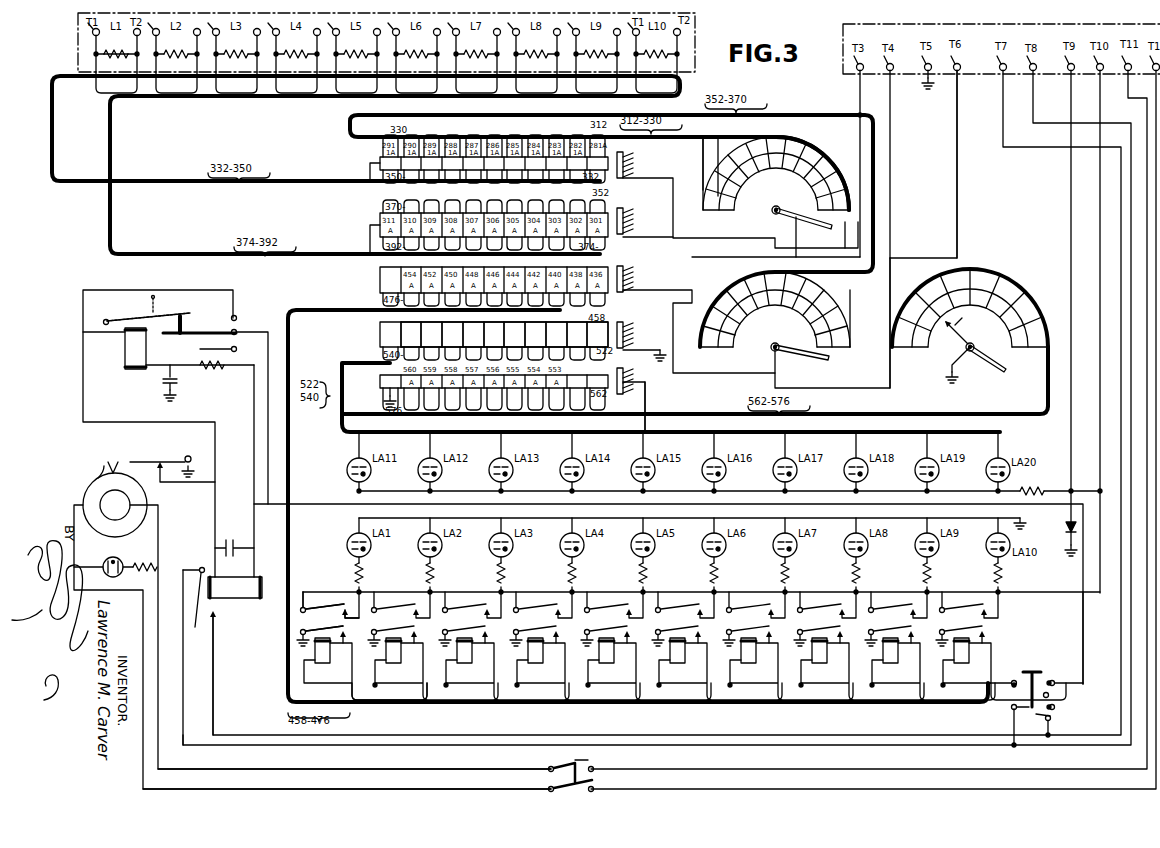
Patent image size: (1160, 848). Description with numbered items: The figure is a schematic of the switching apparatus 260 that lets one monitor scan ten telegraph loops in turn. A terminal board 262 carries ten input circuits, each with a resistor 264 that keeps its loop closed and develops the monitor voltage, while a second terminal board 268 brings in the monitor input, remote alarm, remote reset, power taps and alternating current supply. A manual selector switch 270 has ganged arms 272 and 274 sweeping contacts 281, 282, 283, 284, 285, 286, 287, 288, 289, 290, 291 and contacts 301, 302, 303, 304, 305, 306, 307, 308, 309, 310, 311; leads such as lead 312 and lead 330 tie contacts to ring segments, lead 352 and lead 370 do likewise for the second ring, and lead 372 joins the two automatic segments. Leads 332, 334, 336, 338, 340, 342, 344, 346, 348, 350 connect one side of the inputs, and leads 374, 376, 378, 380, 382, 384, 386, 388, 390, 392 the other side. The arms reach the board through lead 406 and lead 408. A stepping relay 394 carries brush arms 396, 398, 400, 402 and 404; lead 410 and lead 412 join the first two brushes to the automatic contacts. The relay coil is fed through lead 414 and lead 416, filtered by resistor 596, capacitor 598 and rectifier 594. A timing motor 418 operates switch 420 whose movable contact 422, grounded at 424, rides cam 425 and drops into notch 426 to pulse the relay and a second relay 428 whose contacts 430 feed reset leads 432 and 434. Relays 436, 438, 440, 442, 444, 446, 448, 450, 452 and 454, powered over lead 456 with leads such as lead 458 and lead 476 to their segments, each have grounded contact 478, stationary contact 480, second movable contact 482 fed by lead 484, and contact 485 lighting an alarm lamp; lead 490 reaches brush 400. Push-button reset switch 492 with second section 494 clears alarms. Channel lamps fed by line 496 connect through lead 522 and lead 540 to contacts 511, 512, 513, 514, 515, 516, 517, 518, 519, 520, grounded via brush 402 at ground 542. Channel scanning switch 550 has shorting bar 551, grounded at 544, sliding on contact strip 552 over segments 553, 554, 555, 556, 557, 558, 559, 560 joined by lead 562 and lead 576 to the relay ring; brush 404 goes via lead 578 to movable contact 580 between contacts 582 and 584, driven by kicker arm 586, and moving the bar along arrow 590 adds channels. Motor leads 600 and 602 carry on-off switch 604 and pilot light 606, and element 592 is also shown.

The switching apparatus 260 is at (85, 248).
The terminal board 262 is at (78, 47).
The resistor 264 is at (382, 46).
The second terminal board 268 is at (843, 26).
The manual selector switch 270 is at (738, 218).
The selector arm 272 is at (789, 237).
The sweep arm 274 is at (787, 362).
The contact 281 is at (714, 173).
The contact 282 is at (722, 205).
The contact 283 is at (730, 186).
The contact 284 is at (742, 173).
The contact 285 is at (755, 163).
The contact 286 is at (774, 157).
The contact 287 is at (791, 162).
The contact 288 is at (800, 172).
The contact 289 is at (812, 183).
The contact 290 is at (832, 214).
The contact 291 is at (824, 218).
The contact 301 is at (722, 343).
The contact 302 is at (724, 342).
The contact 303 is at (729, 321).
The contact 304 is at (740, 308).
The contact 305 is at (754, 298).
The contact 306 is at (773, 293).
The contact 307 is at (781, 299).
The contact 308 is at (800, 307).
The contact 309 is at (812, 319).
The contact 310 is at (836, 340).
The contact 311 is at (840, 353).
The lead 312 is at (703, 185).
The lead 330 is at (845, 178).
The lead 332 is at (114, 47).
The lead 334 is at (174, 47).
The lead 336 is at (234, 47).
The lead 338 is at (294, 47).
The lead 340 is at (354, 47).
The lead 342 is at (414, 47).
The lead 344 is at (474, 47).
The lead 346 is at (534, 47).
The lead 348 is at (594, 47).
The lead 350 is at (654, 47).
The lead 352 is at (703, 333).
The lead 370 is at (845, 322).
The lead 372 is at (370, 163).
The lead 374 is at (116, 82).
The lead 376 is at (176, 82).
The lead 378 is at (236, 82).
The lead 380 is at (296, 82).
The lead 382 is at (356, 82).
The lead 384 is at (416, 82).
The lead 386 is at (476, 82).
The lead 388 is at (536, 82).
The lead 390 is at (596, 82).
The lead 392 is at (656, 82).
The stepping relay 394 is at (120, 360).
The brush arm 396 is at (737, 200).
The brush contact 398 is at (645, 220).
The wiper contact 400 is at (753, 323).
The wiper contact 402 is at (638, 332).
The brush 404 is at (631, 400).
The lead 406 is at (860, 92).
The lead 408 is at (890, 96).
The lead 410 is at (727, 238).
The lead 412 is at (716, 373).
The lead 414 is at (254, 405).
The lead 416 is at (322, 504).
The timing motor 418 is at (100, 489).
The normally open switch 420 is at (158, 453).
The movable contact 422 is at (120, 458).
The ground 424 is at (188, 456).
The cam 425 is at (100, 486).
The notch 426 is at (98, 478).
The second relay 428 is at (243, 598).
The contacts 430 is at (198, 625).
The lead 432 is at (213, 672).
The lead 434 is at (188, 745).
The relay 436 is at (362, 663).
The relay 438 is at (433, 663).
The relay 440 is at (504, 663).
The relay 442 is at (575, 663).
The relay 444 is at (646, 663).
The relay 446 is at (717, 663).
The relay 448 is at (788, 663).
The relay 450 is at (859, 663).
The relay 452 is at (930, 663).
The relay 454 is at (1001, 663).
The lead 456 is at (1083, 608).
The lead 458 is at (352, 689).
The lead 476 is at (998, 692).
The movable contact 478 is at (613, 623).
The stationary contact 480 is at (344, 602).
The second movable contact 482 is at (318, 594).
The lead 484 is at (701, 584).
The stationary contact 485 is at (345, 604).
The lead 490 is at (957, 168).
The push-button reset switch 492 is at (1044, 667).
The second section 494 is at (1052, 715).
The line 496 is at (750, 489).
The contact 511 is at (597, 334).
The contact 512 is at (577, 334).
The contact 513 is at (556, 334).
The contact 514 is at (535, 334).
The contact 515 is at (514, 334).
The contact 516 is at (494, 334).
The contact 517 is at (473, 334).
The contact 518 is at (452, 334).
The contact 519 is at (431, 334).
The contact 520 is at (411, 334).
The lead 522 is at (358, 455).
The lead 540 is at (998, 456).
The ground 542 is at (661, 346).
The ground 544 is at (950, 374).
The channel scanning switch 550 is at (960, 340).
The arcuate shorting bar 551 is at (1007, 372).
The contact strip 552 is at (912, 352).
The contact segment 553 is at (922, 304).
The contact segment 554 is at (917, 311).
The contact segment 555 is at (941, 293).
The contact segment 556 is at (966, 290).
The contact segment 557 is at (991, 287).
The contact segment 558 is at (990, 299).
The contact segment 559 is at (1010, 329).
The contact segment 560 is at (1015, 341).
The lead 562 is at (915, 286).
The lead 576 is at (1035, 350).
The lead 578 is at (648, 386).
The movable contact 580 is at (238, 331).
The stationary contact 582 is at (192, 328).
The stationary contact 584 is at (196, 342).
The kicker arm 586 is at (147, 309).
The arrow 590 is at (963, 321).
The relay unit 592 is at (148, 290).
The rectifier 594 is at (1064, 527).
The resistor 596 is at (212, 370).
The capacitor 598 is at (164, 382).
The lead 600 is at (376, 769).
The lead 602 is at (376, 789).
The on-off switch 604 is at (592, 759).
The pilot light 606 is at (120, 560).